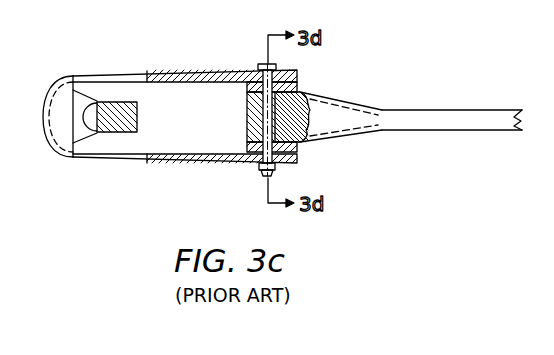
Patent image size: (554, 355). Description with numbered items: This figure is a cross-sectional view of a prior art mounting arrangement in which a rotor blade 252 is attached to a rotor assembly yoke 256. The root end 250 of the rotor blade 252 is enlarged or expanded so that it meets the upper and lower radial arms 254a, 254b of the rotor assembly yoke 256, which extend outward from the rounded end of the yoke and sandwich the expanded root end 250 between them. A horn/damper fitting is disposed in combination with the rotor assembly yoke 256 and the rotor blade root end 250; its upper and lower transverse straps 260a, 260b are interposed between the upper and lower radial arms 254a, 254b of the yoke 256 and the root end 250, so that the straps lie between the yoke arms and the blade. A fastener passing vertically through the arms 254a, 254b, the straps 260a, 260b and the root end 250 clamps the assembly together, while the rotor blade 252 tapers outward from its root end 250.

The root end 250 is at (330, 106).
The rotor blade 252 is at (467, 110).
The upper radial arm 254a is at (188, 69).
The lower radial arm 254b is at (181, 165).
The rotor assembly yoke 256 is at (110, 66).
The upper transverse strap 260a is at (298, 84).
The lower transverse strap 260b is at (298, 160).